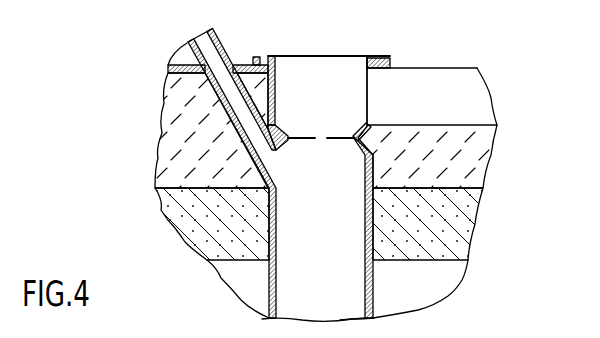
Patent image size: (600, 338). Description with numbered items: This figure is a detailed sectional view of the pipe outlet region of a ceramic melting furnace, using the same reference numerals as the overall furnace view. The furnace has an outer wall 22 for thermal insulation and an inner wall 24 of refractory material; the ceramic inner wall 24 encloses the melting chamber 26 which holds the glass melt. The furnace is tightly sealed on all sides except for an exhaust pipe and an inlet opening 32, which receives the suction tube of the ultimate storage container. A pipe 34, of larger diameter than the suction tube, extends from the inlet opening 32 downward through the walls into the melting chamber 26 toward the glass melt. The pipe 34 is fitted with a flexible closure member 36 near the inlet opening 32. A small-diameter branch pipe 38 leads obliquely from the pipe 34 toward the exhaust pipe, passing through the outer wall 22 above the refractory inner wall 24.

The outer wall 22 is at (180, 112).
The inner wall 24 is at (203, 228).
The melting chamber 26 is at (242, 280).
The inlet opening 32 is at (332, 67).
The pipe 34 is at (373, 288).
The flexible closure member 36 is at (350, 130).
The branch pipe 38 is at (227, 48).